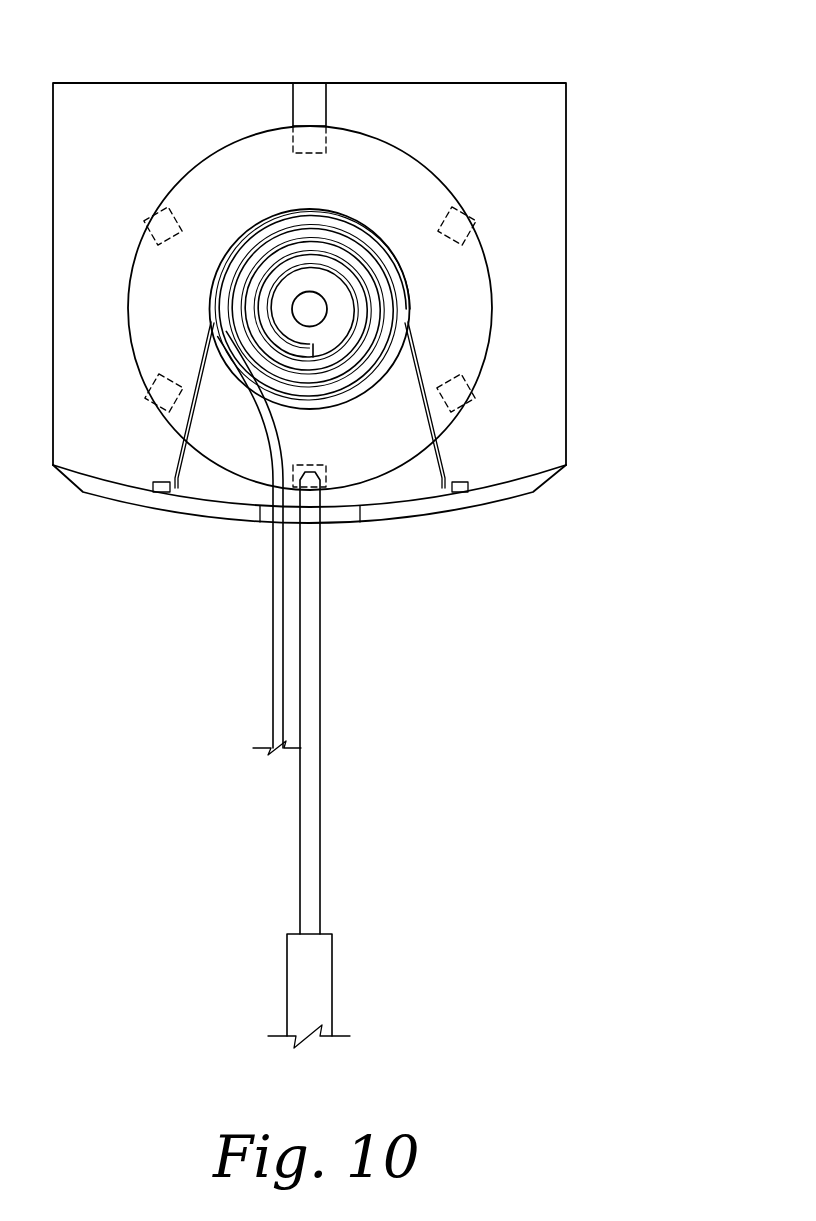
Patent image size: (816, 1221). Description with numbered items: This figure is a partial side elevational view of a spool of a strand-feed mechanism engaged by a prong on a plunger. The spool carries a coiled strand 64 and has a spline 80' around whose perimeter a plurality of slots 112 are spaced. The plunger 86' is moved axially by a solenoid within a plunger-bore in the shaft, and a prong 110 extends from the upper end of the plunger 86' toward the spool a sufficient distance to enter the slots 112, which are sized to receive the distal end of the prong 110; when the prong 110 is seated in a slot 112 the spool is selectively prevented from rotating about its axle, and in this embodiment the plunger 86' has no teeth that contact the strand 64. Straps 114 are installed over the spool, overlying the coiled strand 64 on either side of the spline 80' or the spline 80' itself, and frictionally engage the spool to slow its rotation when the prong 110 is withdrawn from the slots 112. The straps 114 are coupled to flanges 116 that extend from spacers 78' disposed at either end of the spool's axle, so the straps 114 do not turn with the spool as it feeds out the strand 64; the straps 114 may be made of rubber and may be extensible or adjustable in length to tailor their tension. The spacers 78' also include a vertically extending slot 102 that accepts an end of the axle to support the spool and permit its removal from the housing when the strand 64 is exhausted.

The spacer 78' is at (371, 274).
The spline 80' is at (310, 259).
The vertically extending slot 102 is at (292, 108).
The slots 112 is at (463, 240).
The straps 114 is at (440, 462).
The flanges 116 is at (477, 502).
The strand 64 is at (272, 450).
The prong 110 is at (320, 806).
The plunger 86' is at (356, 983).